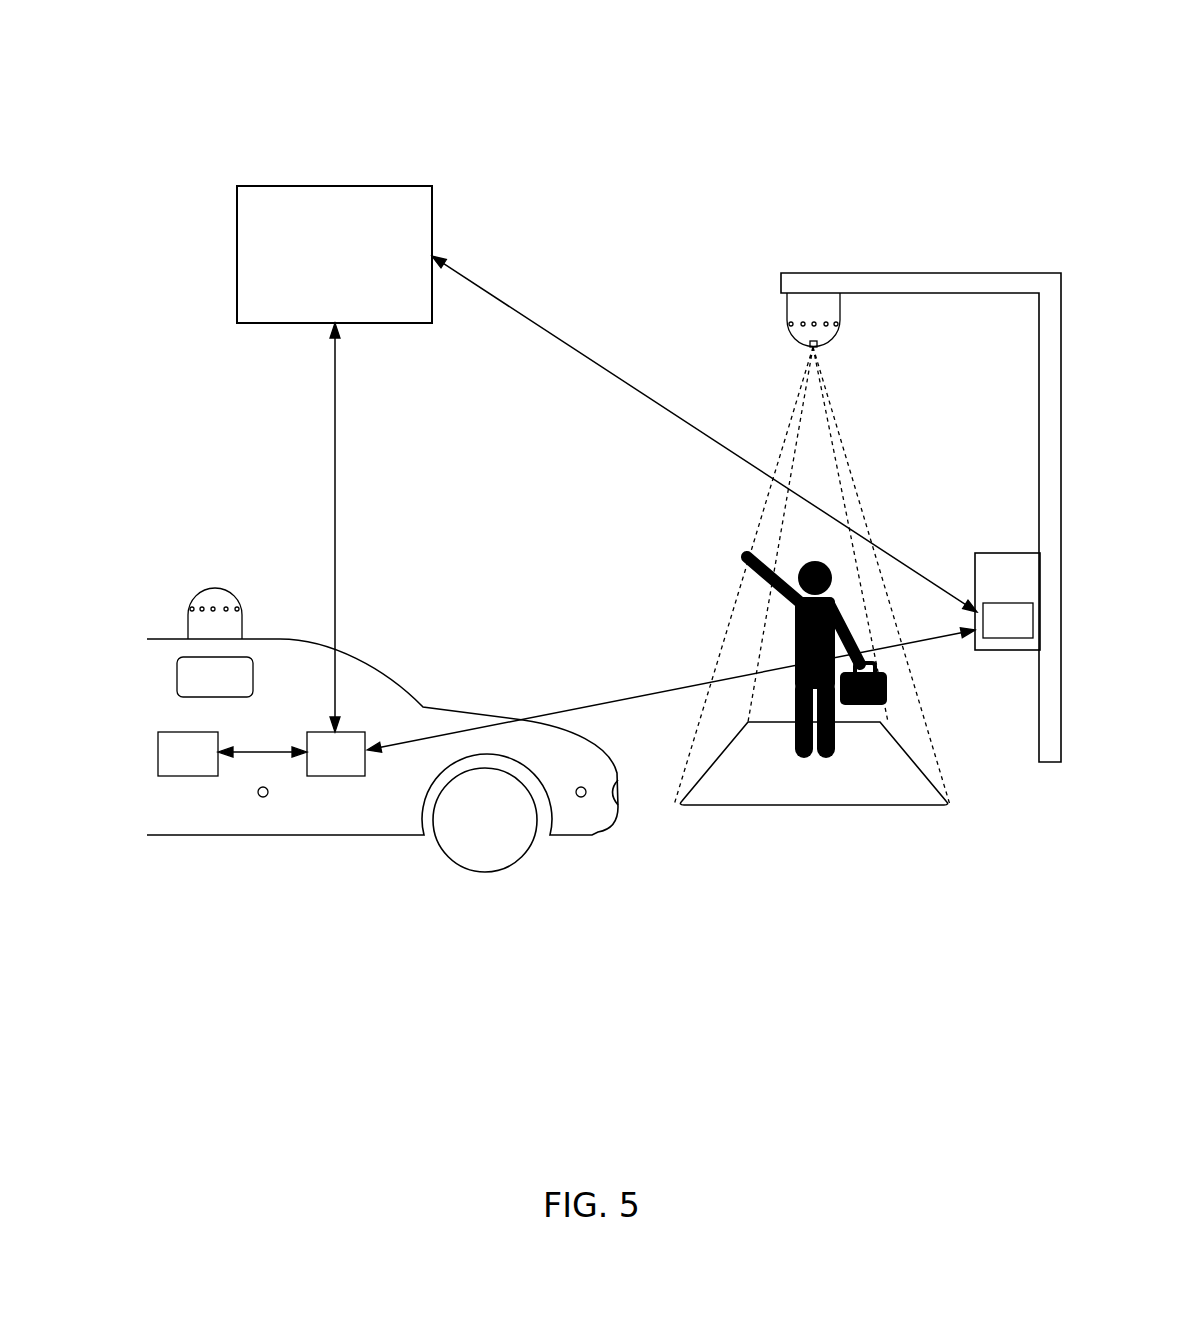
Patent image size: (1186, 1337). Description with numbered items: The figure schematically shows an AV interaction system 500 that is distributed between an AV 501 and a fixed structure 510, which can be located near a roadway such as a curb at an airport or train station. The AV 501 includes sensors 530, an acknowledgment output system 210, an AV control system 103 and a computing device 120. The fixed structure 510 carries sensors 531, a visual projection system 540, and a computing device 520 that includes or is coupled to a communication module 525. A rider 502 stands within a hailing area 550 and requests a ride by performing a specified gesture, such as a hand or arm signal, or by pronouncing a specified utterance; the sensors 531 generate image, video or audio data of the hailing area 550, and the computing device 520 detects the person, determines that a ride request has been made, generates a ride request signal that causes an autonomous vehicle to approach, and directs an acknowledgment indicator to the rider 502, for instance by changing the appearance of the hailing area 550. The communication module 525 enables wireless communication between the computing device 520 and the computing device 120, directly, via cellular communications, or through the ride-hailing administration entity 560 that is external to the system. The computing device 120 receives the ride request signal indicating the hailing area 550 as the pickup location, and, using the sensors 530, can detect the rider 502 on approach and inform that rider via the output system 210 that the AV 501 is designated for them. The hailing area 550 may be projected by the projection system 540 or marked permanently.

The AV interaction system 500 is at (803, 52).
The AV 501 is at (473, 712).
The rider 502 is at (795, 648).
The fixed structure 510 is at (948, 255).
The computing device 520 is at (987, 589).
The communication module 525 is at (987, 634).
The sensors 530 is at (235, 580).
The sensors 531 is at (798, 327).
The visual projection system 540 is at (823, 350).
The hailing area 550 is at (905, 797).
The ride-hailing administration entity 560 is at (314, 307).
The acknowledgment output system 210 is at (195, 691).
The AV control system 103 is at (168, 767).
The computing device 120 is at (316, 767).